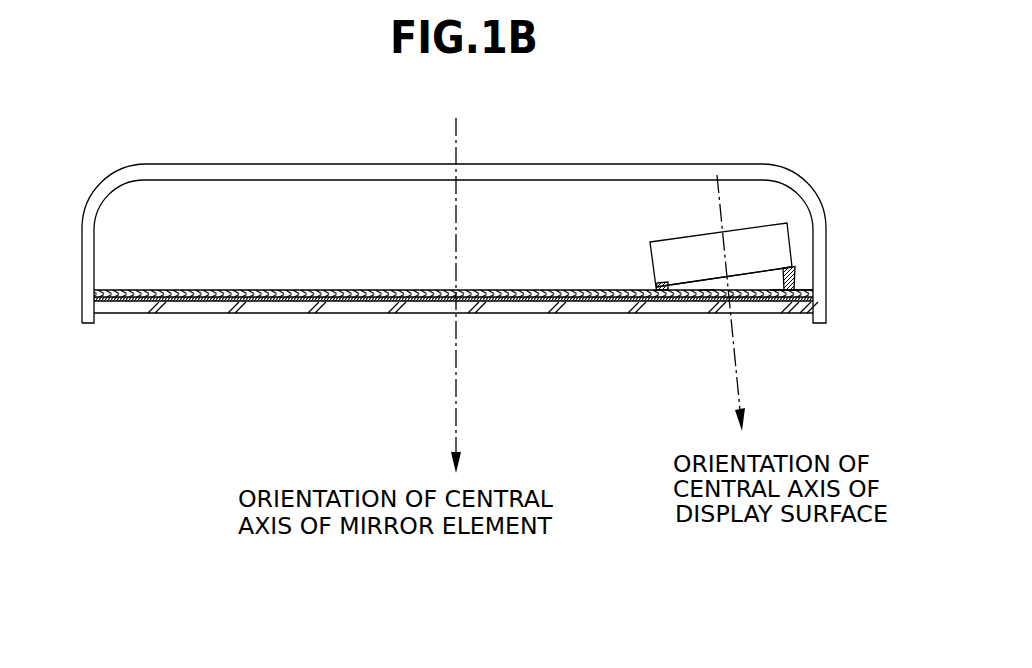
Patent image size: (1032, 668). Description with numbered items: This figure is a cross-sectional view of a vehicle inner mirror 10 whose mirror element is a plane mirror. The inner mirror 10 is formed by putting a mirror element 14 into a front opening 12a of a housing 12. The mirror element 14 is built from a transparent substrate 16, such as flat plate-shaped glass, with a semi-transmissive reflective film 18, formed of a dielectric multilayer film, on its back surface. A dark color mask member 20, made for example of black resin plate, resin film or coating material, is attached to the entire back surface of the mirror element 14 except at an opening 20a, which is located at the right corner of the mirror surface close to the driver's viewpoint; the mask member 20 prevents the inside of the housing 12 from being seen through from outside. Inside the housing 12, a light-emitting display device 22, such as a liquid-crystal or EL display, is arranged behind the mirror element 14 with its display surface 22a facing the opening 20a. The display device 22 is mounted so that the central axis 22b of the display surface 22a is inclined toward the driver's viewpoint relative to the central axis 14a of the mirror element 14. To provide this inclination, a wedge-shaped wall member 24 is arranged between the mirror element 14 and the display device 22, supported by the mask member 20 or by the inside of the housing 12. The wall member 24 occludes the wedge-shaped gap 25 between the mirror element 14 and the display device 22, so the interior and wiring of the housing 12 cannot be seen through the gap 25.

The inner mirror 10 is at (776, 121).
The housing 12 is at (597, 165).
The front opening 12a is at (805, 324).
The mirror element 14 is at (456, 352).
The central axis of the mirror element 14a is at (457, 143).
The transparent substrate 16 is at (283, 308).
The semi-transmissive reflective film 18 is at (211, 300).
The dark color mask member 20 is at (142, 294).
The opening 20a is at (778, 294).
The light-emitting display device 22 is at (780, 238).
The display surface 22a is at (685, 289).
The central axis of the display surface 22b is at (719, 207).
The wedge-shaped wall member 24 is at (795, 278).
The wedge-shaped gap 25 is at (708, 284).